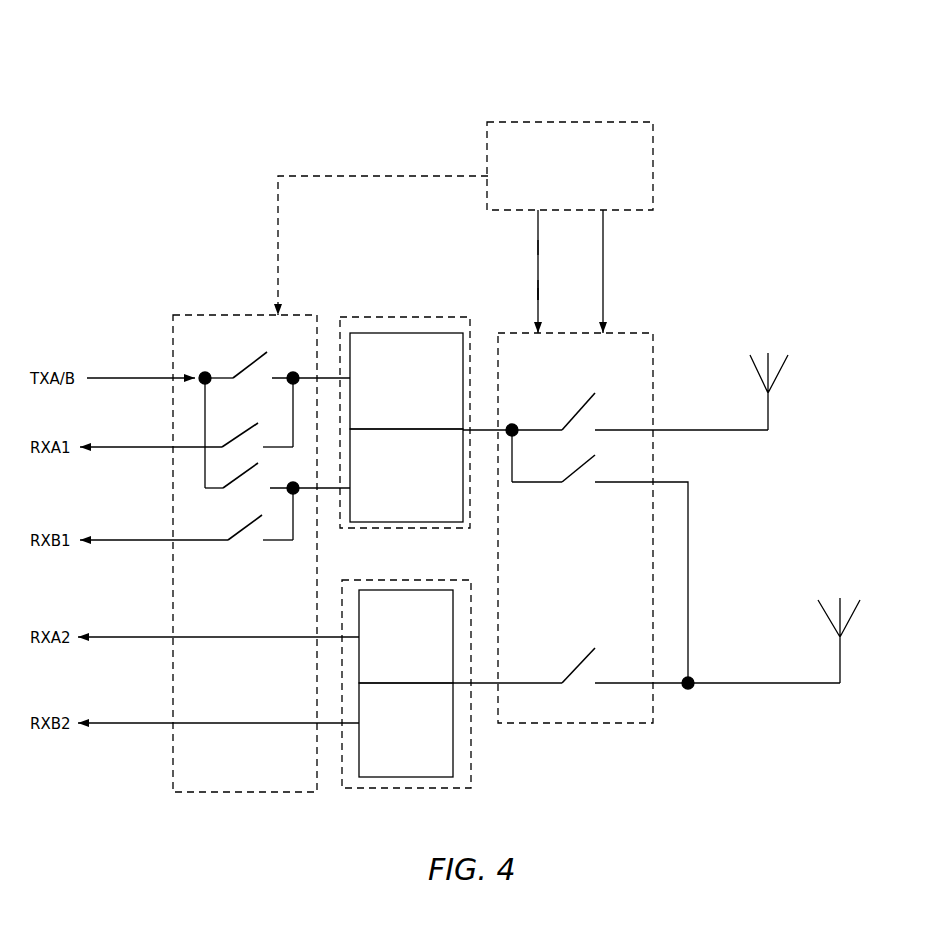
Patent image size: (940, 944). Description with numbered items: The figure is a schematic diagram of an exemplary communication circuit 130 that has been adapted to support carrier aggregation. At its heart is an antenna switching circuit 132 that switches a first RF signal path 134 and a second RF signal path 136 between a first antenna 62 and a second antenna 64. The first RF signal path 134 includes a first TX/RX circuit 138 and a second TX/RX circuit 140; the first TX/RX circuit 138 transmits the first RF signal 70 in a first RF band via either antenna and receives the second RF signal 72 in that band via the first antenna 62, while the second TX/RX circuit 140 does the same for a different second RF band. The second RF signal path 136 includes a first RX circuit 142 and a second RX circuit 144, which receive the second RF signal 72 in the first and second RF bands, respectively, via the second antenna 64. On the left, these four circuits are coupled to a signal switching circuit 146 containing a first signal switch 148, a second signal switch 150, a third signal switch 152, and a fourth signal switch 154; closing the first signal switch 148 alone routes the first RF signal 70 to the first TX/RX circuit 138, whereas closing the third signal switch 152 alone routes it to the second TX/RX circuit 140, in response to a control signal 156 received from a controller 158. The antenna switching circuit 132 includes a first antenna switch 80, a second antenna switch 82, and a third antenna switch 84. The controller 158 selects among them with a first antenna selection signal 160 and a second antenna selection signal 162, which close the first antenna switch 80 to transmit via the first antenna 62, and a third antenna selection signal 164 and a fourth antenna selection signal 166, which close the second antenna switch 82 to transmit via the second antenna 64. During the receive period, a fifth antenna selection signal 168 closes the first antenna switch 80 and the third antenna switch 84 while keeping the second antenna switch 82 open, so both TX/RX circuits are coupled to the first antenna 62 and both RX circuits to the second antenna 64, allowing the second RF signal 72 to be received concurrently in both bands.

The communication circuit 130 is at (772, 126).
The controller 158 is at (555, 122).
The first antenna selection signal 160 is at (536, 248).
The second antenna selection signal 162 is at (536, 294).
The third antenna selection signal 164 is at (540, 248).
The fourth antenna selection signal 166 is at (540, 293).
The fifth antenna selection signal 168 is at (606, 256).
The control signal 156 is at (349, 180).
The antenna switching circuit 132 is at (653, 366).
The signal switching circuit 146 is at (229, 315).
The first RF signal 70 is at (127, 378).
The second RF signal 72 is at (129, 447).
The first signal switch 148 is at (232, 362).
The second signal switch 150 is at (254, 444).
The third signal switch 152 is at (254, 491).
The fourth signal switch 154 is at (254, 543).
The first RF signal path 134 is at (353, 317).
The first TX/RX circuit 138 is at (409, 333).
The second TX/RX circuit 140 is at (415, 522).
The second RF signal path 136 is at (362, 580).
The first RX circuit 142 is at (393, 590).
The second RX circuit 144 is at (437, 777).
The first antenna switch 80 is at (570, 410).
The second antenna switch 82 is at (580, 484).
The third antenna switch 84 is at (580, 688).
The first antenna 62 is at (780, 372).
The second antenna 64 is at (852, 620).